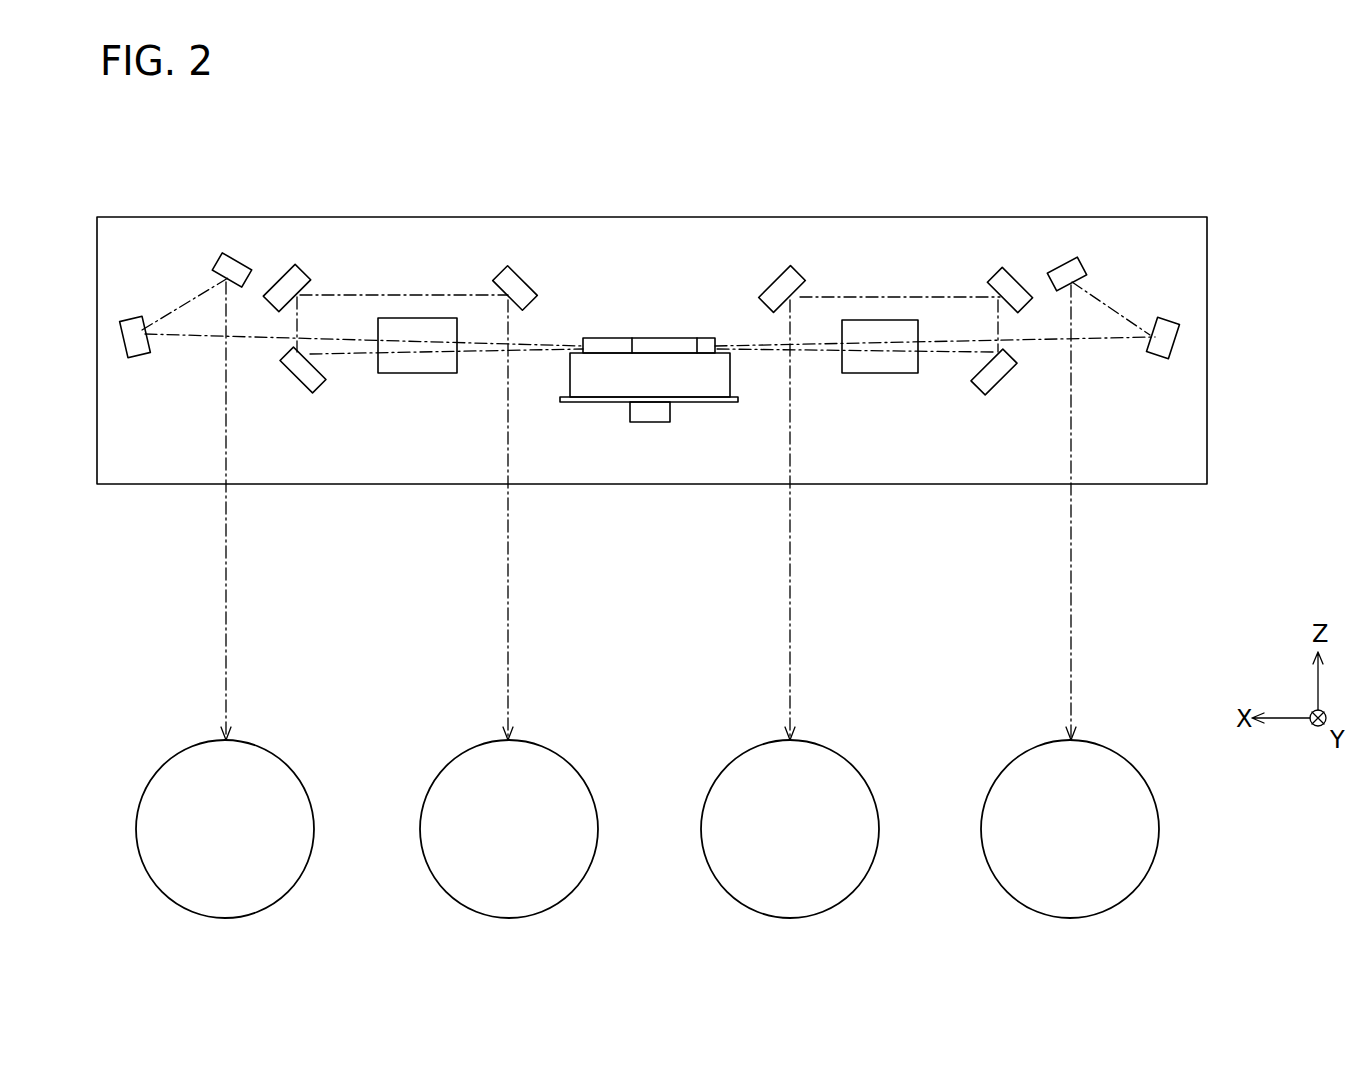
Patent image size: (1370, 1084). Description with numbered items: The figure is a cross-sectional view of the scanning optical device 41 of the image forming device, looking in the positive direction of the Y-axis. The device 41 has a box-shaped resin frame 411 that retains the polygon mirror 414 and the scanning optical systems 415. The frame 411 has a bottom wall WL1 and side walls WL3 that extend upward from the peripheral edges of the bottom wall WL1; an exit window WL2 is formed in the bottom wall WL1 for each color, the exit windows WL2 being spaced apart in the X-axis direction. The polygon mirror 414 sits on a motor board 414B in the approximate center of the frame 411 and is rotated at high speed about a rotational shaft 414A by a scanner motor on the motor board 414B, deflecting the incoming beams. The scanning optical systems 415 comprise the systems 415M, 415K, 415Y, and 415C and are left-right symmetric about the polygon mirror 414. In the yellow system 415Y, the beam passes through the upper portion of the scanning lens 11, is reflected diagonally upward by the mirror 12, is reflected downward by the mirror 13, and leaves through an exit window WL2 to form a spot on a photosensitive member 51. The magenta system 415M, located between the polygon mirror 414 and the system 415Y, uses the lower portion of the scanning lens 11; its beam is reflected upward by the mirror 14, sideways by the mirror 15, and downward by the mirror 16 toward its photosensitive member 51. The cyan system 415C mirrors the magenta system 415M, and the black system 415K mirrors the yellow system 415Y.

The frame 411 is at (122, 216).
The scanning optical device 41 is at (577, 216).
The scanning optical systems 415 is at (770, 86).
The scanning optical system for black 415K is at (190, 241).
The scanning optical system for cyan 415C is at (405, 252).
The scanning optical system for magenta 415M is at (816, 267).
The scanning optical system for yellow 415Y is at (944, 249).
The scanning lens 11 is at (880, 366).
The mirror 12 is at (1163, 361).
The mirror 13 is at (1075, 268).
The mirror 14 is at (994, 396).
The mirror 15 is at (1006, 278).
The mirror 16 is at (795, 280).
The polygon mirror 414 is at (649, 379).
The rotational shaft 414A is at (635, 412).
The motor board 414B is at (593, 390).
The bottom wall WL1 is at (928, 484).
The exit window WL2 is at (236, 484).
The side wall WL3 is at (1207, 337).
The photosensitive member 51 is at (222, 903).